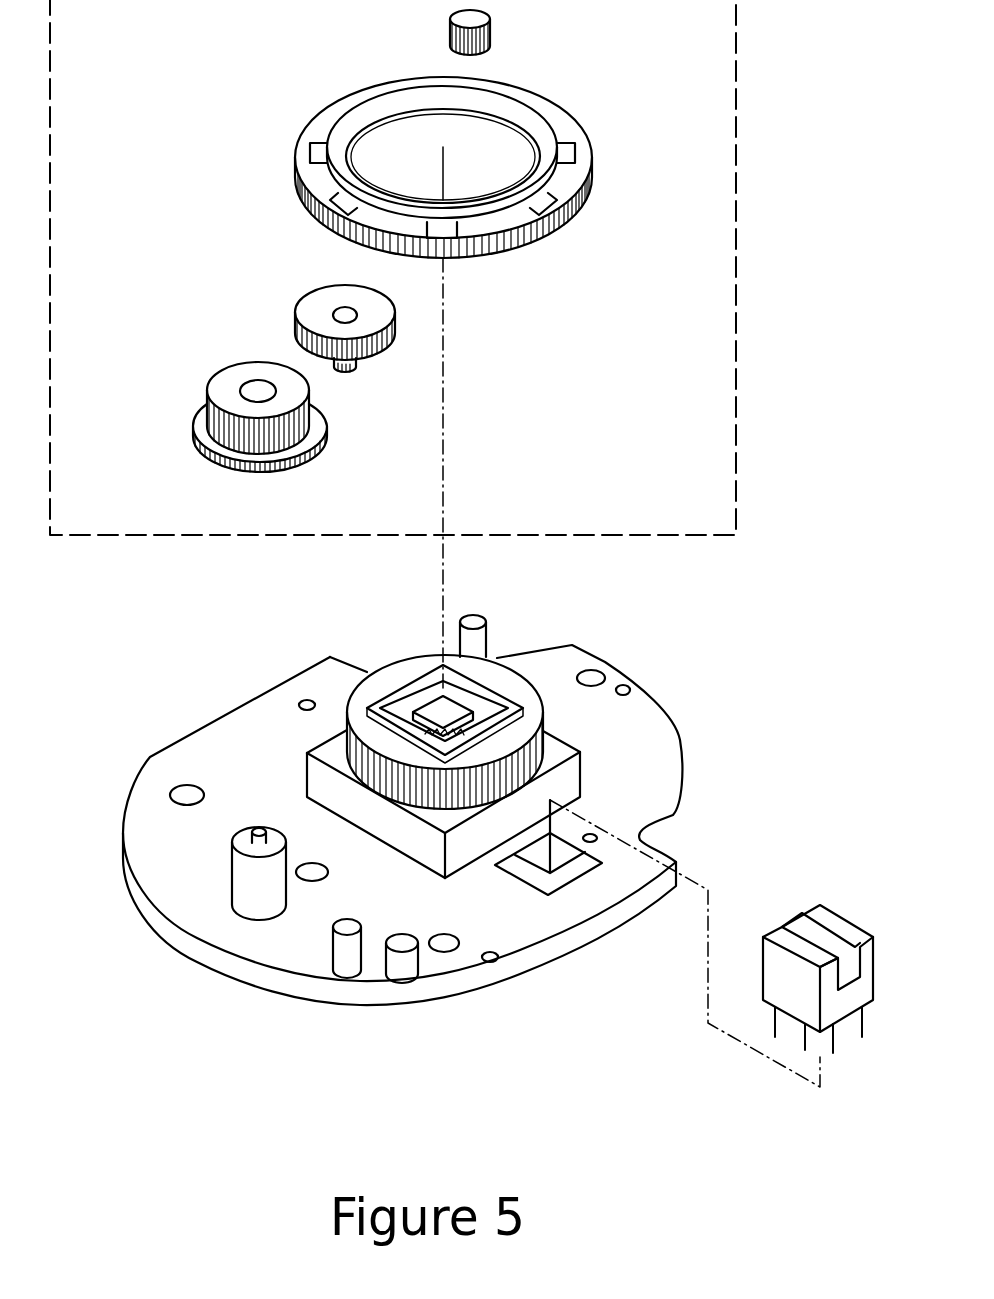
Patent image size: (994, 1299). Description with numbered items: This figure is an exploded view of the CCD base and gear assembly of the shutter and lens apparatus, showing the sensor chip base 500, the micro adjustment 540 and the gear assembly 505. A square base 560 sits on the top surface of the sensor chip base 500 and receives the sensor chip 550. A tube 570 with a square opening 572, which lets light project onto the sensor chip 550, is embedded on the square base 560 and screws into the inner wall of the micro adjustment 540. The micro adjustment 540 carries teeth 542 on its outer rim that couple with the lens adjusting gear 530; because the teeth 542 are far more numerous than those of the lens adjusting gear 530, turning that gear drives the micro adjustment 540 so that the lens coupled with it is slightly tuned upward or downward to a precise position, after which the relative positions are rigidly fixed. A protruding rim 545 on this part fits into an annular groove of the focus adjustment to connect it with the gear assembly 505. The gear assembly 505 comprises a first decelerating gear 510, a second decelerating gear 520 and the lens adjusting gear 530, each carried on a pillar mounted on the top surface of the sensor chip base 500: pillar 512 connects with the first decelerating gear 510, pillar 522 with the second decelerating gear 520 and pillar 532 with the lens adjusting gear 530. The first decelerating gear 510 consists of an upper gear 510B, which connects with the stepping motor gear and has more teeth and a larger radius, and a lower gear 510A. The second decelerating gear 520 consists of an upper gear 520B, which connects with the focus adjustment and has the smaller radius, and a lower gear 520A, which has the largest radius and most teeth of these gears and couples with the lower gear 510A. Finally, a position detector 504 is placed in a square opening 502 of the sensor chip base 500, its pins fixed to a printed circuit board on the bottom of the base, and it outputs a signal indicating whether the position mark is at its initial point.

The sensor chip base 500 is at (691, 756).
The square opening 502 is at (558, 878).
The position detector 504 is at (841, 928).
The gear assembly 505 is at (746, 24).
The first decelerating gear 510 is at (328, 279).
The lower gear 510A is at (351, 368).
The upper gear 510B is at (297, 326).
The pillar 512 is at (341, 955).
The second decelerating gear 520 is at (205, 370).
The lower gear 520A is at (251, 469).
The upper gear 520B is at (205, 404).
The pillar 522 is at (242, 887).
The lens adjusting gear 530 is at (490, 35).
The pillar 532 is at (478, 622).
The micro adjustment 540 is at (586, 117).
The teeth 542 is at (584, 215).
The protruding rim 545 is at (340, 133).
The sensor chip 550 is at (585, 660).
The square base 560 is at (580, 773).
The tube 570 is at (560, 733).
The square opening 572 is at (437, 712).